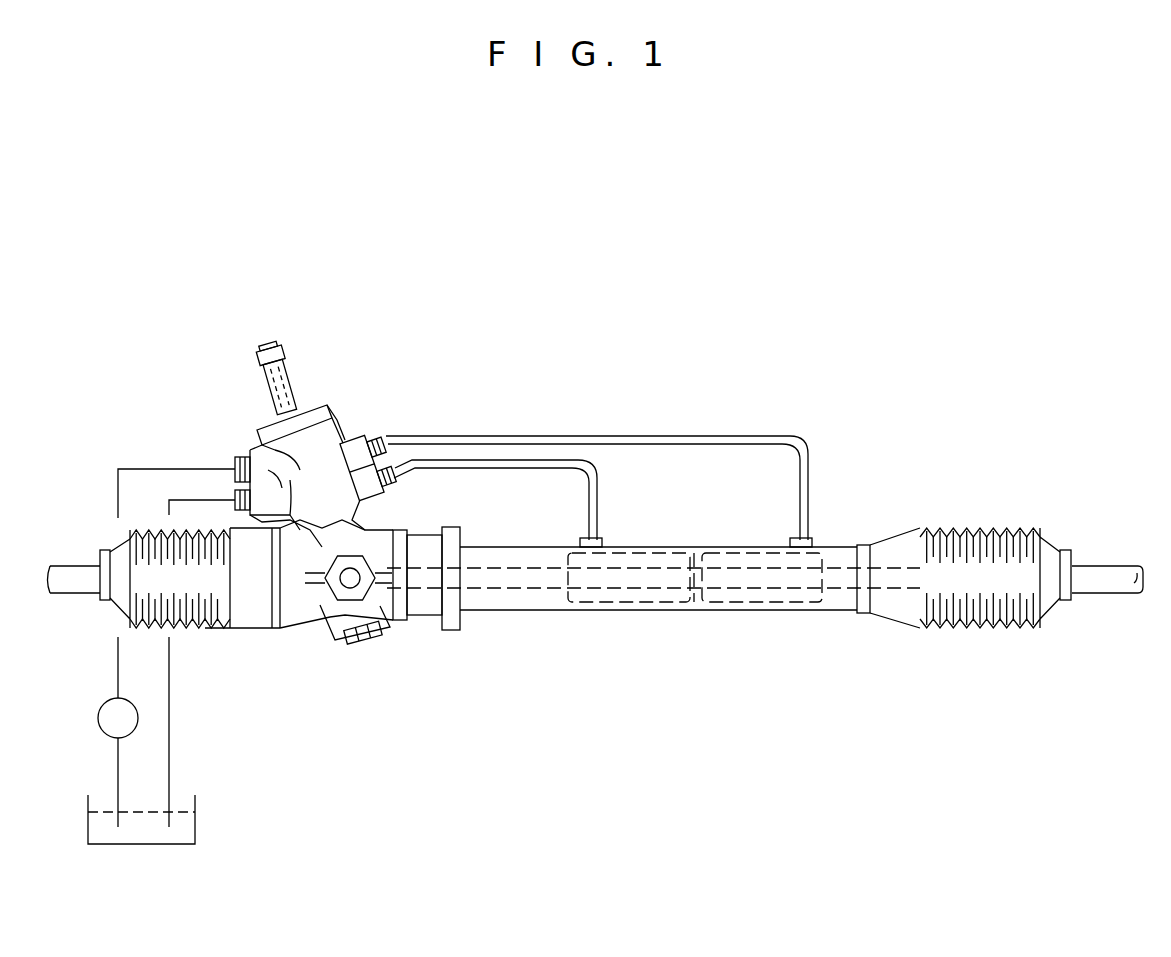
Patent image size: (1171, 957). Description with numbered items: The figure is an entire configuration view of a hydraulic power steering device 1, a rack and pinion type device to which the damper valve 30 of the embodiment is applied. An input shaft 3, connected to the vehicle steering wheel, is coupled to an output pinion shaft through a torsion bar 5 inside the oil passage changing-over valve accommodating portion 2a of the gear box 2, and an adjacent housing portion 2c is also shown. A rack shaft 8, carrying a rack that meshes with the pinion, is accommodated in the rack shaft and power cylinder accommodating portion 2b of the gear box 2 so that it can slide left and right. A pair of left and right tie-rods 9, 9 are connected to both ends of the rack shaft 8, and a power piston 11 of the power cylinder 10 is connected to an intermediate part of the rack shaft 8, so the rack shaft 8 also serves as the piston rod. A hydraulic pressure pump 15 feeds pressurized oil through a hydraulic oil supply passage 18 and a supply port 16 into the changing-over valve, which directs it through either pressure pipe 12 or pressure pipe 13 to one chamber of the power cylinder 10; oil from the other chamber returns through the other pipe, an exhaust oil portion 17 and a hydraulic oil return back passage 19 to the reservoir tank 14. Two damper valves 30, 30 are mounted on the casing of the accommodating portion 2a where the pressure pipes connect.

The hydraulic power steering device 1 is at (892, 337).
The gear box 2 is at (315, 632).
The oil passage changing-over valve accommodating portion 2a is at (275, 437).
The rack shaft and power cylinder accommodating portion 2b is at (497, 612).
The housing portion 2c is at (335, 415).
The input shaft 3 is at (263, 390).
The torsion bar 5 is at (270, 350).
The rack shaft 8 is at (548, 582).
The tie-rods 9 is at (70, 565).
The power cylinder 10 is at (748, 603).
The power piston 11 is at (697, 548).
The pressure pipe 12 is at (508, 470).
The pressure pipe 13 is at (633, 436).
The reservoir tank 14 is at (145, 844).
The hydraulic pressure pump 15 is at (98, 718).
The supply port 16 is at (237, 462).
The exhaust oil portion 17 is at (242, 578).
The hydraulic oil supply passage 18 is at (119, 480).
The hydraulic oil return back passage 19 is at (172, 685).
The damper valve 30 is at (372, 432).